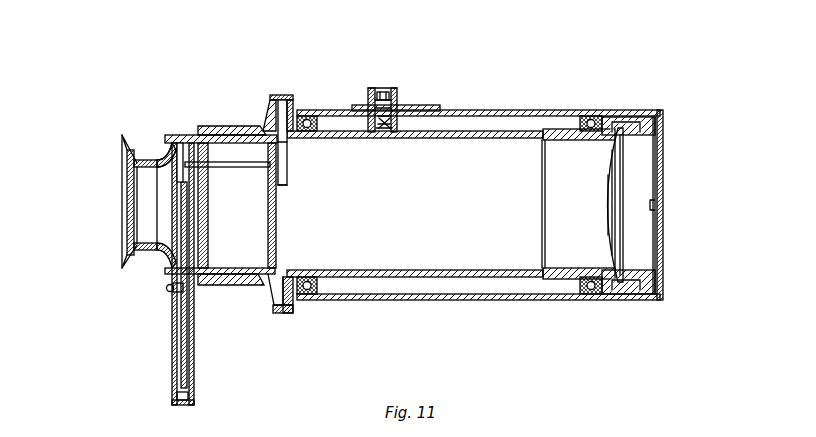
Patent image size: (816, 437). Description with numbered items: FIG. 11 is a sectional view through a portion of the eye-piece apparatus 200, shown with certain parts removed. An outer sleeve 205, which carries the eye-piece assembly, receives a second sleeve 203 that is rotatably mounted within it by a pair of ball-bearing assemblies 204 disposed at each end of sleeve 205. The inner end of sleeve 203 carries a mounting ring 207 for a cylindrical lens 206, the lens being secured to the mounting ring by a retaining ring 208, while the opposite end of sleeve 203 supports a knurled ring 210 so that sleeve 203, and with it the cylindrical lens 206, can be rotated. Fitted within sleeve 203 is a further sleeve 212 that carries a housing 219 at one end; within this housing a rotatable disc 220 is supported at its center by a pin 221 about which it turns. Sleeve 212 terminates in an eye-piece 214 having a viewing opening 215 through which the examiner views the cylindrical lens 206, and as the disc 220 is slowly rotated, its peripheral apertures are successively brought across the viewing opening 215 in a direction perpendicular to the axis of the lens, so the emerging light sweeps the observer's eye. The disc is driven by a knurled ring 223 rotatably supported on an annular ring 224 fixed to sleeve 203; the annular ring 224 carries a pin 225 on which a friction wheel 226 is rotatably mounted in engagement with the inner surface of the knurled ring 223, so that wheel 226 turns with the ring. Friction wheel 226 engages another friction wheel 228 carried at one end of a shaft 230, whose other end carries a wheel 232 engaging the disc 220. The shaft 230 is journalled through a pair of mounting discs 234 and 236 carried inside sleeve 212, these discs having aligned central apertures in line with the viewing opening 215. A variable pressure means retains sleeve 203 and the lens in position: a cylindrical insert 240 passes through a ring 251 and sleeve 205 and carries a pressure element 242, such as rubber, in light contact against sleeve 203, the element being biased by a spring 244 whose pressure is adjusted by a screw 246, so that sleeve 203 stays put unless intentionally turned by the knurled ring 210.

The optical assembly 200 is at (647, 96).
The sleeve 203 is at (528, 131).
The ball-bearing assemblies 204 is at (305, 296).
The sleeve 205 is at (470, 112).
The cylindrical lens 206 is at (615, 192).
The mounting ring 207 is at (607, 118).
The retaining ring 208 is at (655, 124).
The knurled ring 210 is at (208, 127).
The sleeve 212 is at (232, 274).
The eye-piece 214 is at (125, 268).
The viewing opening 215 is at (128, 200).
The housing 219 is at (172, 364).
The rotatable disc 220 is at (181, 398).
The pin 221 is at (170, 290).
The knurled ring 223 is at (286, 100).
The annular ring 224 is at (268, 98).
The pin 225 is at (262, 120).
The friction wheel 226 is at (288, 145).
The friction wheel 228 is at (288, 186).
The shaft 230 is at (180, 143).
The wheel 232 is at (165, 150).
The mounting disc 234 is at (208, 262).
The mounting disc 236 is at (276, 262).
The cylindrical insert 240 is at (400, 107).
The pressure element 242 is at (392, 138).
The spring 244 is at (382, 138).
The screw 246 is at (384, 90).
The ring 251 is at (432, 105).